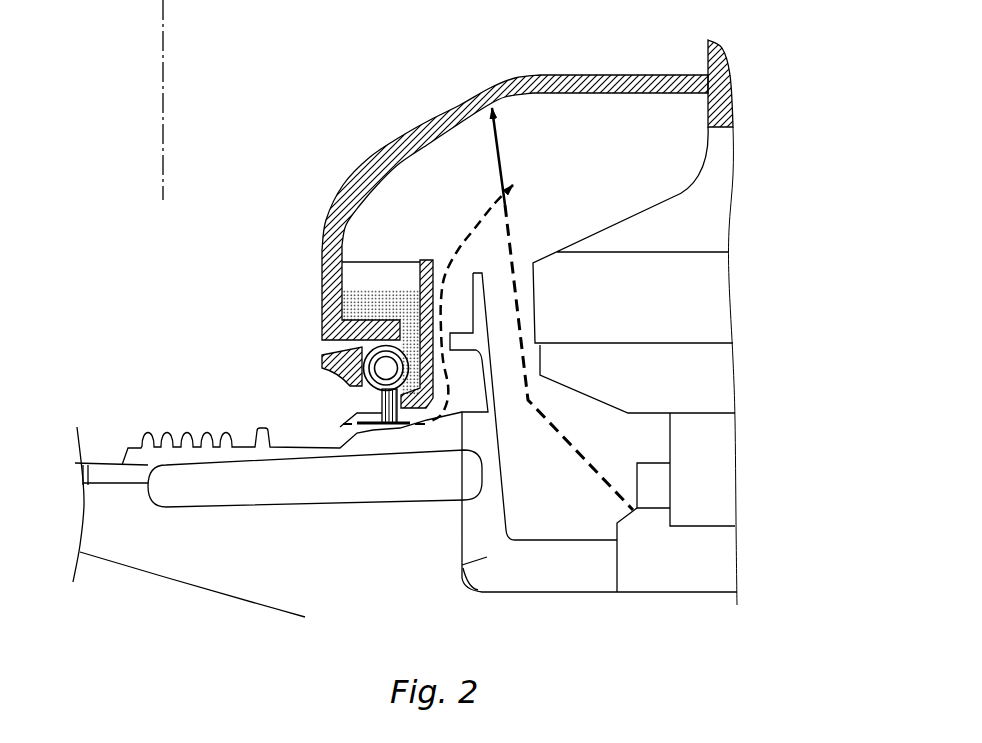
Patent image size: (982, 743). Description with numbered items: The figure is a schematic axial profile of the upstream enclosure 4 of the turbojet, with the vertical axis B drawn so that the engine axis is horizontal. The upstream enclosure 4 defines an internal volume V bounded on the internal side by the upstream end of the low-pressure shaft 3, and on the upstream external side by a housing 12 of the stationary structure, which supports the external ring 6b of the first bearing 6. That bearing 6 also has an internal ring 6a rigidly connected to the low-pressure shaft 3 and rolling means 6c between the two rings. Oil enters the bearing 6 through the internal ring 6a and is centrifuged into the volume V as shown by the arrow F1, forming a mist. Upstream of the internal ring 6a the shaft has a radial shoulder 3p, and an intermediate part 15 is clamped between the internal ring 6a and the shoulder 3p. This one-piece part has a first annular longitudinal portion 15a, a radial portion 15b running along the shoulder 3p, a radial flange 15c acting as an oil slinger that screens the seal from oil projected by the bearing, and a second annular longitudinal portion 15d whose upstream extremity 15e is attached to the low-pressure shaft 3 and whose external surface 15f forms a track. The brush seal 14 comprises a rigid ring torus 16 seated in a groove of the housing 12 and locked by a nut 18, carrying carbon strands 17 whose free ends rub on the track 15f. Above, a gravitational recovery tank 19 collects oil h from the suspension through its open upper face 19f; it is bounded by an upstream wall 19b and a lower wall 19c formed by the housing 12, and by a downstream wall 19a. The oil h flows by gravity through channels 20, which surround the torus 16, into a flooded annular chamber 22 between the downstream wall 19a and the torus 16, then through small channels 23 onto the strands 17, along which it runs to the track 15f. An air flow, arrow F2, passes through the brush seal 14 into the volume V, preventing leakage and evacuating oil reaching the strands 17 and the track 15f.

The vertical axis B is at (163, 133).
The housing 12 is at (465, 117).
The upstream enclosure 4 is at (657, 122).
The internal volume V is at (598, 152).
The gravitational recovery tank 19 is at (401, 275).
The upper face 19f is at (368, 318).
The lower wall 19c is at (353, 310).
The oil h is at (357, 302).
The upstream wall 19b is at (332, 308).
The downstream wall 19a is at (442, 240).
The arrow F2 is at (508, 240).
The arrow F1 is at (597, 492).
The channels 20 is at (390, 366).
The ring torus 16 is at (338, 343).
The nut 18 is at (332, 368).
The brush seal 14 is at (358, 394).
The strands 17 is at (340, 425).
The upstream extremity 15e is at (158, 446).
The annular chamber 22 is at (412, 440).
The small channels 23 is at (423, 440).
The intermediate part 15 is at (553, 440).
The radial flange 15c is at (487, 350).
The second annular longitudinal portion 15d is at (403, 425).
The external surface 15f is at (460, 507).
The radial portion 15b is at (462, 567).
The first annular longitudinal portion 15a is at (555, 567).
The radial shoulder 3p is at (470, 540).
The first bearing 6 is at (643, 438).
The external ring 6b is at (705, 376).
The rolling means 6c is at (705, 466).
The internal ring 6a is at (705, 559).
The low-pressure shaft 3 is at (257, 568).